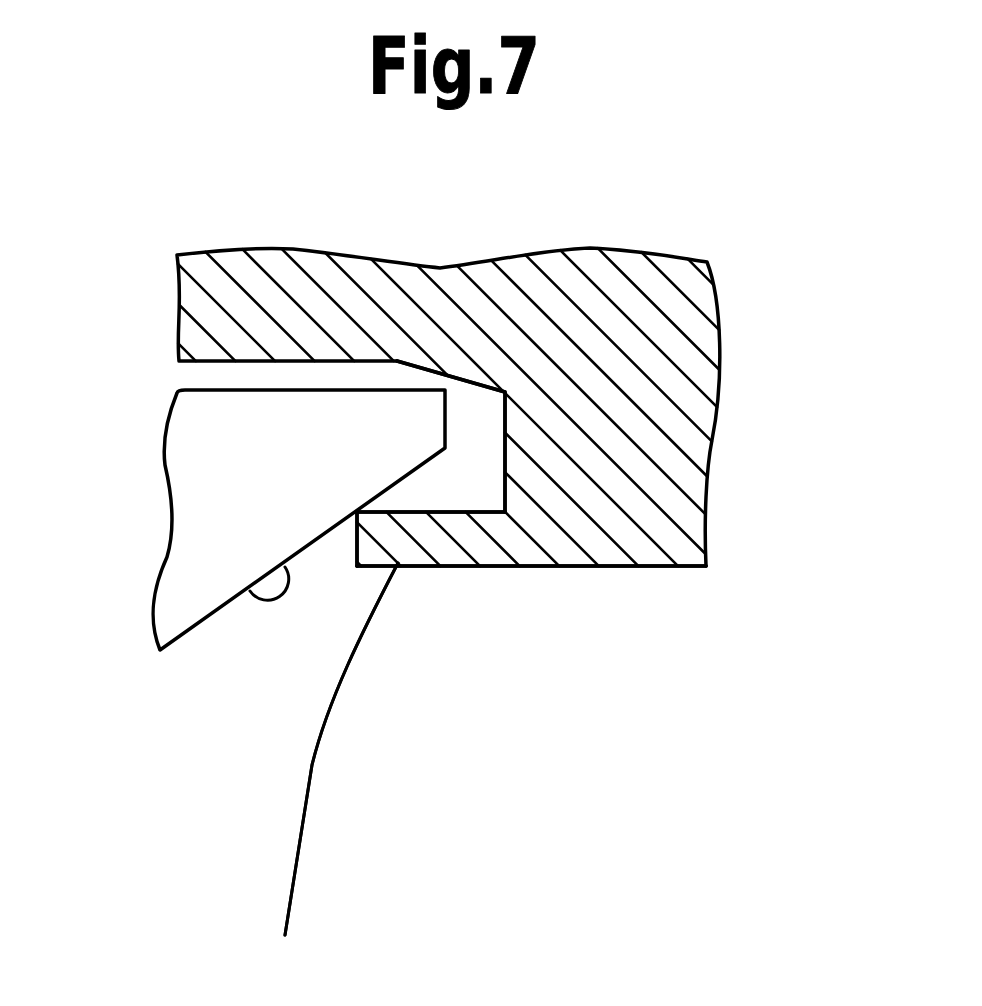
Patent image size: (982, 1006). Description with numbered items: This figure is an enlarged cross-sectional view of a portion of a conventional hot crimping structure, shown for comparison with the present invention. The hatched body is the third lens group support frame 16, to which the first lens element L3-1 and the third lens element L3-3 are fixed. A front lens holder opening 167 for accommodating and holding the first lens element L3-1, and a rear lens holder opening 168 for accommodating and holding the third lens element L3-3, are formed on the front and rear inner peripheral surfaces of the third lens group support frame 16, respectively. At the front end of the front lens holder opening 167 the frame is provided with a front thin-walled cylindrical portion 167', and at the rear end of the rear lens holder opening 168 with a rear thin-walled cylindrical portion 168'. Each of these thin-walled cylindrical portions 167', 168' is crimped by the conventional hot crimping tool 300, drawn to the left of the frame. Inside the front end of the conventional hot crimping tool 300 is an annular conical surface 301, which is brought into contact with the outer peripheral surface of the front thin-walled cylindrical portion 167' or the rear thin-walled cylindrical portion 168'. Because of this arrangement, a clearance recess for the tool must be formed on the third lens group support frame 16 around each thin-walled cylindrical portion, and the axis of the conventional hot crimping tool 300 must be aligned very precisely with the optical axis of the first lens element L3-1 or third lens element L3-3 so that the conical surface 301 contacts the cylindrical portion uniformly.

The third lens group support frame 16 is at (672, 303).
The front lens holder opening 167 is at (531, 611).
The rear lens holder opening 168 is at (531, 627).
The front thin-walled cylindrical portion 167' is at (237, 663).
The rear thin-walled cylindrical portion 168' is at (232, 680).
The conventional hot crimping tool 300 is at (227, 482).
The annular conical surface 301 is at (255, 594).
The first lens element L3-1 is at (357, 902).
The third lens element L3-3 is at (357, 902).